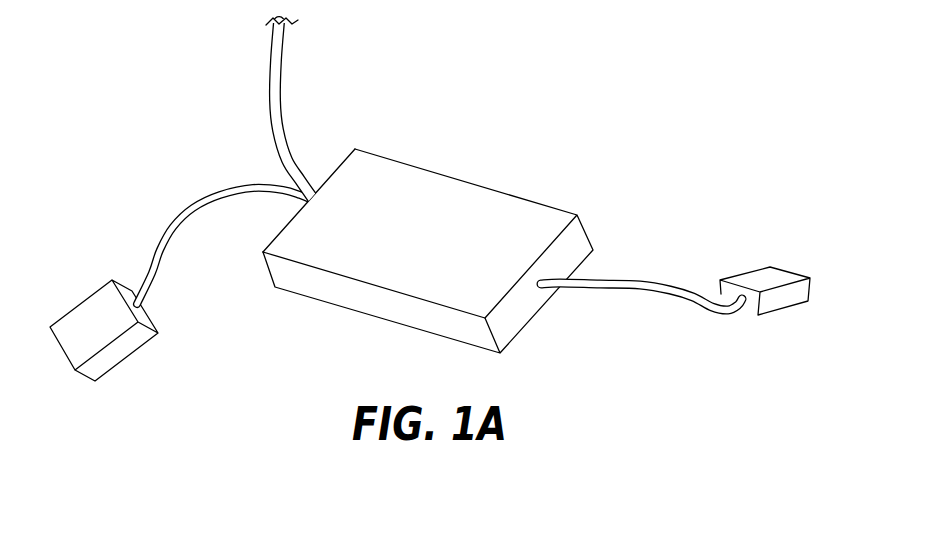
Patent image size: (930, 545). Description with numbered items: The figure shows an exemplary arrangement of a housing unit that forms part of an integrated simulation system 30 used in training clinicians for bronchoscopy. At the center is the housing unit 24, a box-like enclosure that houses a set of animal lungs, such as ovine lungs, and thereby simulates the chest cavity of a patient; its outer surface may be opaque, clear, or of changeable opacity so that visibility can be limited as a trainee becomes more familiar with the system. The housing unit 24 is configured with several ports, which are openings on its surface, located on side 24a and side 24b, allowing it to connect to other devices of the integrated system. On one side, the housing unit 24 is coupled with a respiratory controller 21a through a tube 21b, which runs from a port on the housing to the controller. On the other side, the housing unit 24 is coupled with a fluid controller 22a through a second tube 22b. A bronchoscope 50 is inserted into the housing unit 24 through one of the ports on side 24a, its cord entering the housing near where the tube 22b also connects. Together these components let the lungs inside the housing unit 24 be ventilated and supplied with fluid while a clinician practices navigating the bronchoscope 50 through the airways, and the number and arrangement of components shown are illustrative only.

The system 30 is at (685, 103).
The housing unit 24 is at (548, 204).
The side 24a is at (330, 171).
The side 24b is at (582, 265).
The bronchoscope 50 is at (270, 78).
The fluid controller 22a is at (78, 322).
The tube 22b is at (168, 226).
The respiratory controller 21a is at (773, 265).
The tube 21b is at (638, 287).